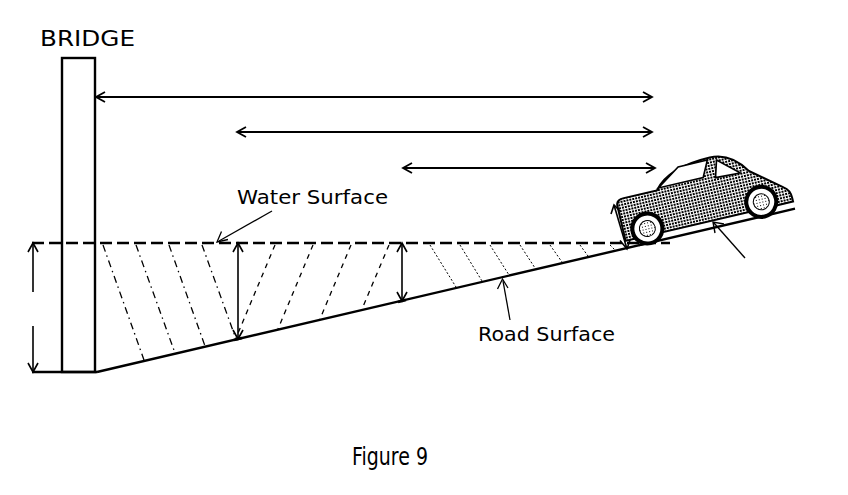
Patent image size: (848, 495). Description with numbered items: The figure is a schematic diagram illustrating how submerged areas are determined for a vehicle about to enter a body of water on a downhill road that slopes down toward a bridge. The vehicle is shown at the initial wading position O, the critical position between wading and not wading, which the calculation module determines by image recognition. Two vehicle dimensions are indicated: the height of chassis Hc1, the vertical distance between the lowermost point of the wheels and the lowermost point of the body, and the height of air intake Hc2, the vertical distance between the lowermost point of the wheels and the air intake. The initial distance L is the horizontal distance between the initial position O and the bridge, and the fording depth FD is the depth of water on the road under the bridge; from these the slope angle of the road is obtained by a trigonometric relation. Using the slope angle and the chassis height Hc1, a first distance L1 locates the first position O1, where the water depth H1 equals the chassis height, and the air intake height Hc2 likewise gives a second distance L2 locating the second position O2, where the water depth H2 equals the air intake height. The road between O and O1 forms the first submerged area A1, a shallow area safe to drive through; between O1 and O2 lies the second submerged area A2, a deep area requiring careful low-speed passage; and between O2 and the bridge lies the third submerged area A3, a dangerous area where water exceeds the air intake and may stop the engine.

The initial distance L is at (374, 86).
The first distance L1 is at (529, 158).
The second distance L2 is at (444, 122).
The water depth at first position H1 is at (390, 272).
The water depth at second position H2 is at (223, 291).
The fording depth FD is at (31, 307).
The height of chassis Hc1 is at (746, 245).
The height of air intake Hc2 is at (602, 227).
The first submerged area A1 is at (522, 266).
The second submerged area A2 is at (312, 291).
The third submerged area A3 is at (169, 302).
The initial wading position O is at (655, 263).
The first position O1 is at (401, 317).
The second position O2 is at (246, 355).